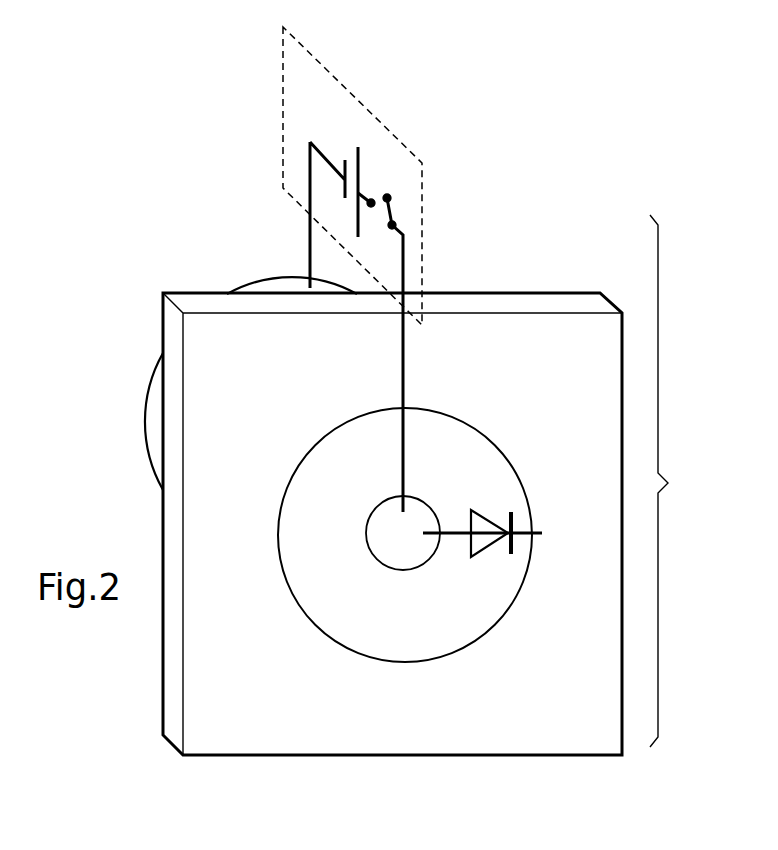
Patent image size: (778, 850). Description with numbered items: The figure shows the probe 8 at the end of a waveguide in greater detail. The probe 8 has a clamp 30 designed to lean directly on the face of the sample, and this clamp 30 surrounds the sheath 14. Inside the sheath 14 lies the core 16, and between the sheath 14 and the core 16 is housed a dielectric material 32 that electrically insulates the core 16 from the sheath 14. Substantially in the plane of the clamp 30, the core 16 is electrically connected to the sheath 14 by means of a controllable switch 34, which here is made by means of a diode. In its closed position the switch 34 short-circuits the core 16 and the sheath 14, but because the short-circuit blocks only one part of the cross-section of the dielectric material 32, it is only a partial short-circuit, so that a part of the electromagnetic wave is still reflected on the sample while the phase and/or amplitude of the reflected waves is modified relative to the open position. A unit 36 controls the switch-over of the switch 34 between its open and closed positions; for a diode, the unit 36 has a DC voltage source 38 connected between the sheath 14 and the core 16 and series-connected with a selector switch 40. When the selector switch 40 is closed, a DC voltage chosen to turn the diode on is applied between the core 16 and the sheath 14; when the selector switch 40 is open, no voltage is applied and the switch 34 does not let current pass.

The probe 8 is at (669, 481).
The sheath 14 is at (268, 285).
The core 16 is at (370, 527).
The clamp 30 is at (240, 745).
The dielectric material 32 is at (451, 642).
The controllable switch 34 is at (495, 540).
The unit for controlling the switch 36 is at (345, 83).
The DC voltage source 38 is at (360, 157).
The selector switch 40 is at (398, 203).